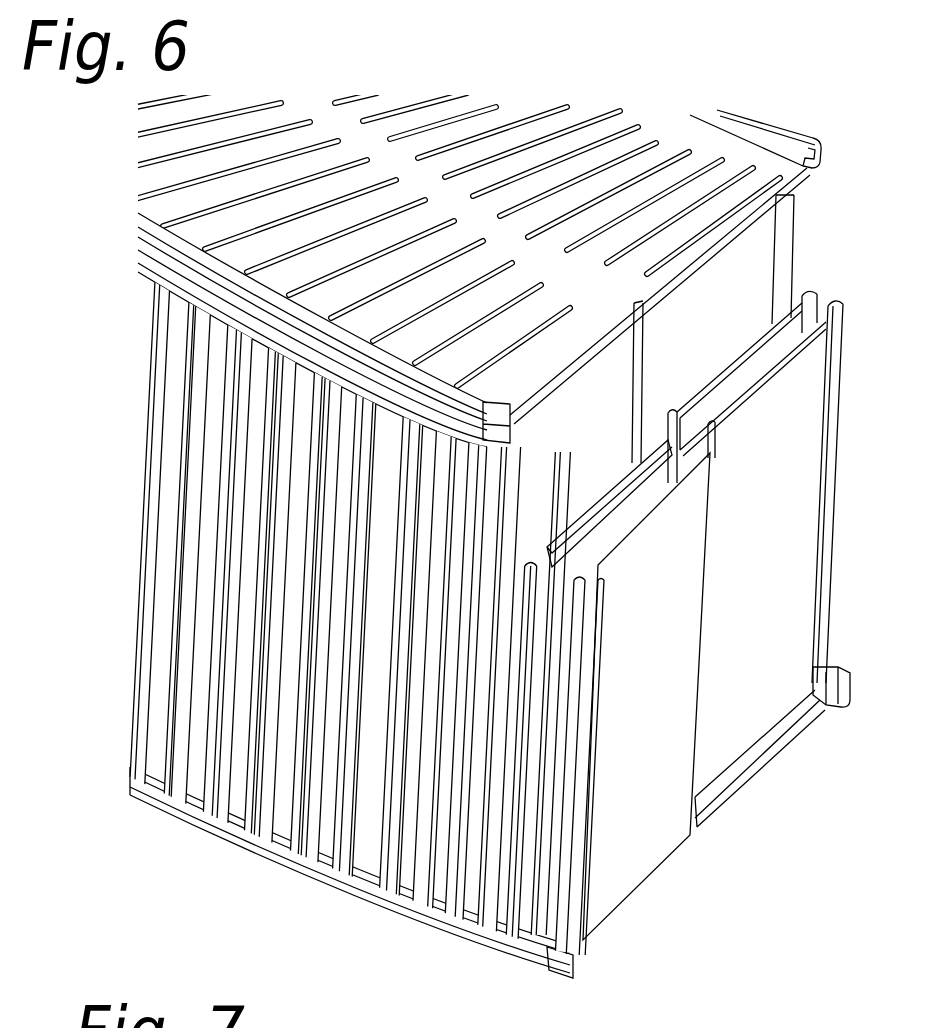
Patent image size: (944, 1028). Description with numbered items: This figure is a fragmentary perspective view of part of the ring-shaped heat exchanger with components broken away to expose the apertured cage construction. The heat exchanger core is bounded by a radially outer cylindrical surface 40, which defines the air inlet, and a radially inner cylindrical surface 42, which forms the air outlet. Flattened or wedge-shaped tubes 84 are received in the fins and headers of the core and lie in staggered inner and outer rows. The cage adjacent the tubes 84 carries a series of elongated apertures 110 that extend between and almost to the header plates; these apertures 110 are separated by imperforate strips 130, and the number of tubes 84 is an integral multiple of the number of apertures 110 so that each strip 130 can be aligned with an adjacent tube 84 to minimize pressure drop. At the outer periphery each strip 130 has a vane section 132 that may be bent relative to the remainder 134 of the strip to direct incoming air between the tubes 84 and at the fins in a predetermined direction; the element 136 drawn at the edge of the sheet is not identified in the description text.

The basket 40 is at (280, 767).
The post 42 is at (797, 240).
The side panel 84 is at (638, 683).
The vertical bar 110 is at (505, 915).
The channel bar 130 is at (547, 950).
The channel bar 132 is at (380, 872).
The bar 134 is at (363, 850).
The bar 136 is at (850, 1020).